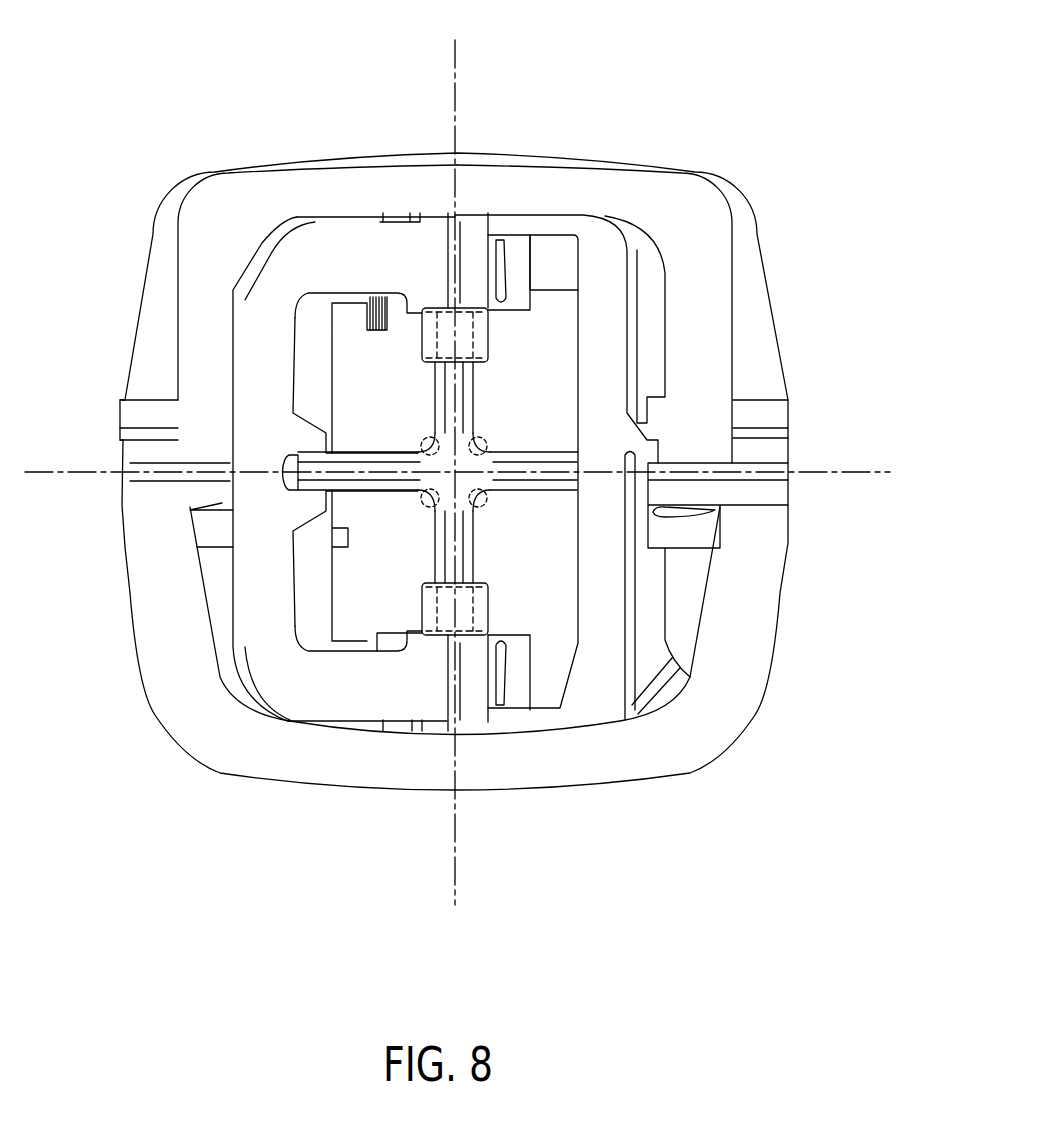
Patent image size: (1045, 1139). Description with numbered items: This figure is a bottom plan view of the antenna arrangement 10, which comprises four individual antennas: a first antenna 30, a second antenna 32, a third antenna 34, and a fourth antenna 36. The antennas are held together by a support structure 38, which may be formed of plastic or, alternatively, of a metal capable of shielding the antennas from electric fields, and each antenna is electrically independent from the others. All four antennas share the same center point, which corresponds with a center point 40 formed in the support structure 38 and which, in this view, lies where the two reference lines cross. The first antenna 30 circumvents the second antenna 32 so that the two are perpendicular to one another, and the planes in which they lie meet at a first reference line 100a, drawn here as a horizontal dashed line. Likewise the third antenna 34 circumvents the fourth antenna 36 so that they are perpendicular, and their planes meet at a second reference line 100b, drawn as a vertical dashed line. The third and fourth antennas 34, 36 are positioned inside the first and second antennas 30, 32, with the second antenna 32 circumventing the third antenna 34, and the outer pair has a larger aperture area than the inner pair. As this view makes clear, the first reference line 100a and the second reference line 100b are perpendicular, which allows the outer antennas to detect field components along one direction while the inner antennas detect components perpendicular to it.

The antenna arrangement 10 is at (397, 88).
The first antenna 30 is at (757, 603).
The second antenna 32 is at (698, 412).
The third antenna 34 is at (590, 702).
The fourth antenna 36 is at (350, 697).
The support structure 38 is at (468, 390).
The center point 40 is at (458, 470).
The first reference line 100a is at (808, 473).
The second reference line 100b is at (456, 97).